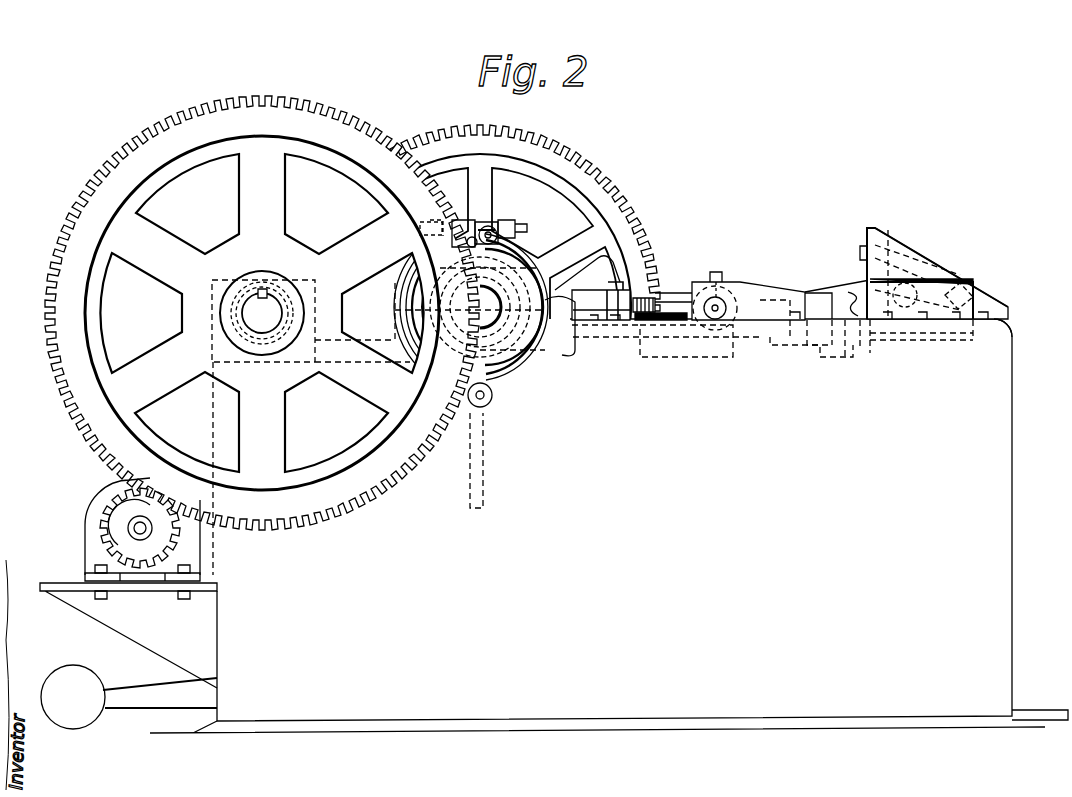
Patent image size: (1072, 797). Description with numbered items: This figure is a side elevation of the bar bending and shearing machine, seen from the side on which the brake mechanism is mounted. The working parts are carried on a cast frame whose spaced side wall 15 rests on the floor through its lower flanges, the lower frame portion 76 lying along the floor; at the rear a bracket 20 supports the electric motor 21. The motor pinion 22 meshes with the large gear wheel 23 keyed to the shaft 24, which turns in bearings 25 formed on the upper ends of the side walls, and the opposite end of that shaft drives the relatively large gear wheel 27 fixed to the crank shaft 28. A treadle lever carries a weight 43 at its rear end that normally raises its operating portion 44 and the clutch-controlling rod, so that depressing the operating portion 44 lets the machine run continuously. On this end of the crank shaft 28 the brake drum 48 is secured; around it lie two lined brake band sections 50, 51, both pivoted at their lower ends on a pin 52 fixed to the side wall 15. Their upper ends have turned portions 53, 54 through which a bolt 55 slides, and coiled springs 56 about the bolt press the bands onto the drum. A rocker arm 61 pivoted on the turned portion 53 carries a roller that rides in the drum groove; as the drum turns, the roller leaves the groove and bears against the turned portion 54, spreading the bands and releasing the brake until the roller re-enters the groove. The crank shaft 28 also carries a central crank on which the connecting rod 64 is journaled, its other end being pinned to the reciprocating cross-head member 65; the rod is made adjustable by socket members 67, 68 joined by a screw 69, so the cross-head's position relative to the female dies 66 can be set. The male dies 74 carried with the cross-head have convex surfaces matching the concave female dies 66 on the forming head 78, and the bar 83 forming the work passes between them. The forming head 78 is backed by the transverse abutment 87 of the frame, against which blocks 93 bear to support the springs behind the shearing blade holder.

The side wall 15 is at (658, 462).
The bracket 20 is at (195, 626).
The electric motor 21 is at (100, 498).
The pinion 22 is at (116, 538).
The large gear wheel 23 is at (296, 522).
The shaft 24 is at (243, 315).
The bearing 25 is at (316, 283).
The large gear wheel 27 is at (632, 246).
The crank shaft 28 is at (470, 342).
The weight 43 is at (85, 718).
The operating portion of the lever 44 is at (1040, 712).
The drum 48 is at (516, 348).
The brake band section 50 is at (402, 312).
The brake band section 51 is at (500, 378).
The pin 52 is at (484, 406).
The turned portion 53 is at (466, 220).
The turned portion 54 is at (494, 229).
The bolt 55 is at (492, 226).
The coiled spring 56 is at (528, 230).
The rocker arm 61 is at (467, 246).
The connecting rod 64 is at (557, 290).
The cross-head member 65 is at (773, 300).
The female dies 66 is at (872, 353).
The socket member 67 is at (576, 352).
The socket member 68 is at (674, 297).
The screw 69 is at (640, 357).
The male dies 74 is at (812, 293).
The base plate 76 is at (352, 728).
The forming head 78 is at (880, 242).
The bar 83 is at (850, 292).
The abutment 87 is at (995, 306).
The block 93 is at (962, 290).